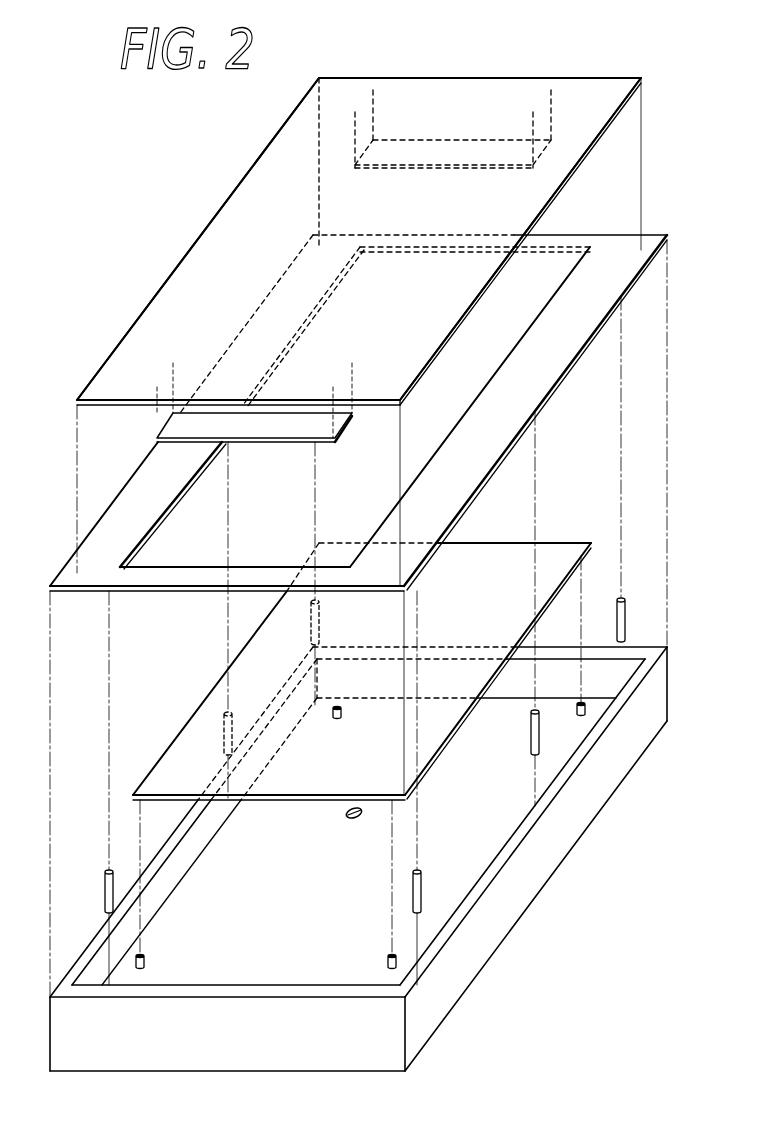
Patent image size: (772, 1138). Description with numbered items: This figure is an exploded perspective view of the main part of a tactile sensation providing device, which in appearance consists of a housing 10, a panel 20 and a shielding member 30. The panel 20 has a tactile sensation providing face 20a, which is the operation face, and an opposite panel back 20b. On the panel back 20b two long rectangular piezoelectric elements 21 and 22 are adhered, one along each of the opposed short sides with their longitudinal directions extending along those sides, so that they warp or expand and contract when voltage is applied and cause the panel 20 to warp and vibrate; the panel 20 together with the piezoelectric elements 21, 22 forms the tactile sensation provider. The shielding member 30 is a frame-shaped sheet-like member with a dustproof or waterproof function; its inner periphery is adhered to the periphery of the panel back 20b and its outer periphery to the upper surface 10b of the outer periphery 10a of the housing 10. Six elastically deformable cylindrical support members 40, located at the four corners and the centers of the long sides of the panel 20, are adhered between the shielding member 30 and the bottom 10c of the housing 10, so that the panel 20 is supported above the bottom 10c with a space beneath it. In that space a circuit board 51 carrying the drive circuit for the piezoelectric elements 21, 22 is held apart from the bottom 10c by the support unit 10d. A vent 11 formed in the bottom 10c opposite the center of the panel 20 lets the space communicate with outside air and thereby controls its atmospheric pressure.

The housing 10 is at (408, 885).
The outer periphery 10a is at (577, 812).
The upper surface 10b is at (501, 847).
The bottom 10c is at (260, 967).
The support unit 10d is at (332, 711).
The vent 11 is at (360, 818).
The panel 20 is at (399, 209).
The tactile sensation providing face 20a is at (252, 192).
The panel back 20b is at (619, 117).
The piezoelectric element 21 is at (188, 426).
The piezoelectric element 22 is at (433, 150).
The shielding member 30 is at (622, 269).
The support member 40 is at (626, 602).
The circuit board 51 is at (552, 543).